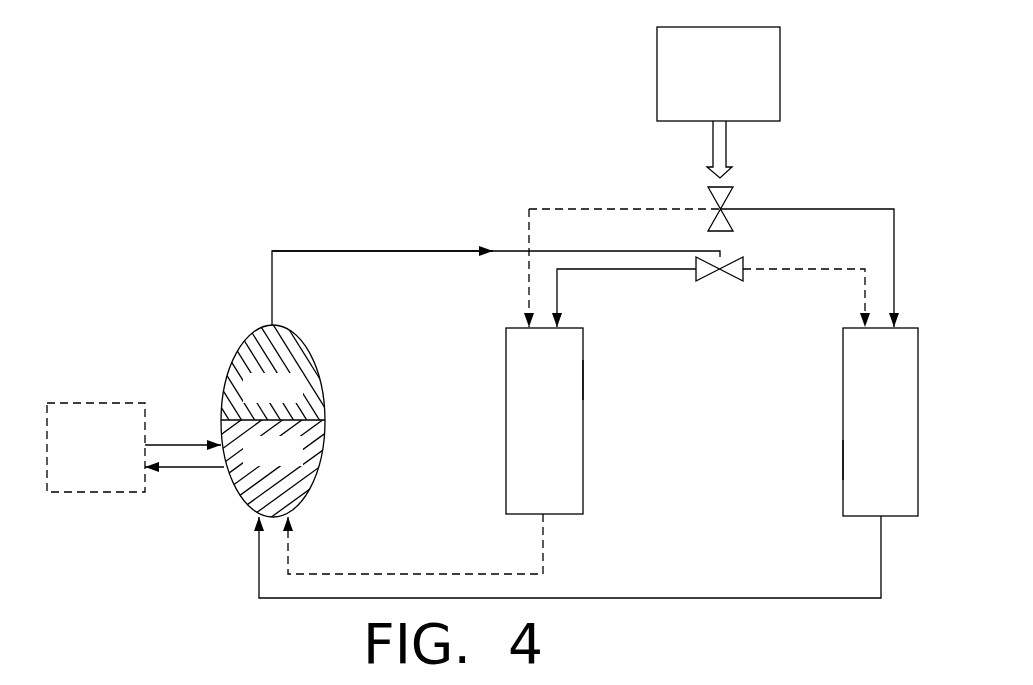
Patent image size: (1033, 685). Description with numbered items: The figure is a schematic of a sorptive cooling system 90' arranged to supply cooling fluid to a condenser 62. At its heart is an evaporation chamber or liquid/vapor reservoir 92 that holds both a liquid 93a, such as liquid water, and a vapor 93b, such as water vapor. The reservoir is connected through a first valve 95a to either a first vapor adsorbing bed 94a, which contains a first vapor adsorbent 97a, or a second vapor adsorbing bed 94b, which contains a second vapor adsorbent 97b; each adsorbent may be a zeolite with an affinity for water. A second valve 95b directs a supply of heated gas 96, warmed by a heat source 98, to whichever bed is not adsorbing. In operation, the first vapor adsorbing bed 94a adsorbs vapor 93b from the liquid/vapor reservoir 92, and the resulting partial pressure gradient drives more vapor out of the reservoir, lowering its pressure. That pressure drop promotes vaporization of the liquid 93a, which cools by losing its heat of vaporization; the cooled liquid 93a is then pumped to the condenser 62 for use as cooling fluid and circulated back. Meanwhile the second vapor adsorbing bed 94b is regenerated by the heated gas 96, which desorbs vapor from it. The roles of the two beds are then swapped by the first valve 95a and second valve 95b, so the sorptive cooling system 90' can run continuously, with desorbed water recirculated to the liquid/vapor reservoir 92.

The sorptive cooling system 90' is at (519, 322).
The liquid/vapor reservoir 92 is at (283, 410).
The liquid 93a is at (300, 464).
The vapor 93b is at (300, 401).
The first vapor adsorbing bed 94a is at (584, 378).
The second vapor adsorbing bed 94b is at (842, 460).
The first valve 95a is at (743, 250).
The second valve 95b is at (740, 193).
The supply of heated gas 96 is at (701, 149).
The first vapor adsorbent 97a is at (518, 433).
The second vapor adsorbent 97b is at (855, 433).
The heat source 98 is at (700, 91).
The condenser 62 is at (80, 462).